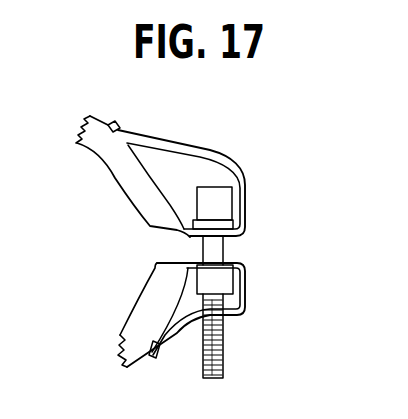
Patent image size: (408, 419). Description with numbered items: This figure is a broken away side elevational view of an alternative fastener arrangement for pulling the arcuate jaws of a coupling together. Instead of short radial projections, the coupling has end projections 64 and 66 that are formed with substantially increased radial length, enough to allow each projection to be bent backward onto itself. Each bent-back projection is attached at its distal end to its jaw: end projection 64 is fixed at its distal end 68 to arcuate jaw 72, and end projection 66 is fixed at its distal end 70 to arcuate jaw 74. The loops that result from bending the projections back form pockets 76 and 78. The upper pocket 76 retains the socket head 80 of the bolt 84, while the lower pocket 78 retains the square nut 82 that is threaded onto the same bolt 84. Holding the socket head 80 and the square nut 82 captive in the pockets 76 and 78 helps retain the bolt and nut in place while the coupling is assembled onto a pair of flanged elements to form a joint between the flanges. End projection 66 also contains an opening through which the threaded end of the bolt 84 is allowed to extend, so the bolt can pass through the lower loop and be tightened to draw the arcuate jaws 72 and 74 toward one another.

The end projection 64 is at (228, 156).
The end projection 66 is at (245, 291).
The distal end 68 is at (122, 128).
The distal end 70 is at (160, 347).
The arcuate jaw 72 is at (102, 146).
The arcuate jaw 74 is at (136, 308).
The pocket 76 is at (192, 163).
The pocket 78 is at (240, 284).
The socket head 80 is at (215, 198).
The square nut 82 is at (218, 275).
The bolt 84 is at (224, 266).